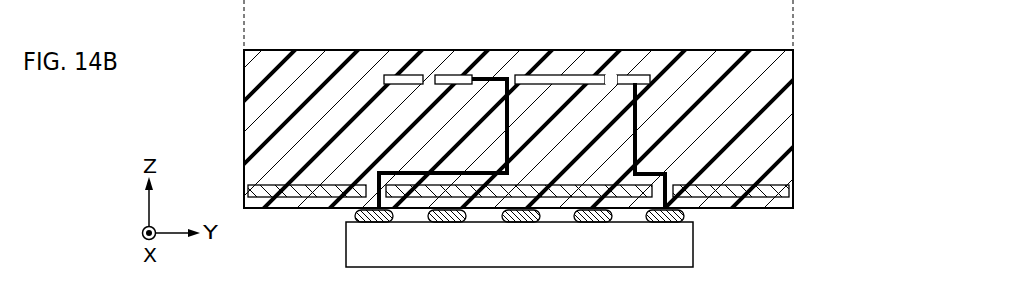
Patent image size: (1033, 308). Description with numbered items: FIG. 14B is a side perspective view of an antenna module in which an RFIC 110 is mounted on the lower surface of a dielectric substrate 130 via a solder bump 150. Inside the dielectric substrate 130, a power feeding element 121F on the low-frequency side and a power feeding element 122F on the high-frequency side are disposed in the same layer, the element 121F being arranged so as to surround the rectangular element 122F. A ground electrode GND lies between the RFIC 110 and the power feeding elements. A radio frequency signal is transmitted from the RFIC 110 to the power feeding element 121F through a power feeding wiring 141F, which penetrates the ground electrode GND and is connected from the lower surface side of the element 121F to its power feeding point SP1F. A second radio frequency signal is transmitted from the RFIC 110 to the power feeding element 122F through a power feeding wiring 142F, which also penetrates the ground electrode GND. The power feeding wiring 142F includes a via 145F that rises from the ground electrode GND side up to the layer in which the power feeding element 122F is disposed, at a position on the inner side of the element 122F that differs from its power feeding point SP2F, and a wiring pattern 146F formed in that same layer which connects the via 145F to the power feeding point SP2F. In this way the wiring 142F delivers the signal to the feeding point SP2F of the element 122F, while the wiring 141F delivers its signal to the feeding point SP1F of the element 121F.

The dielectric substrate 130 is at (783, 77).
The power feeding point SP2F is at (474, 77).
The wiring pattern 146F is at (495, 78).
The power feeding element 122F is at (580, 78).
The power feeding point SP1F is at (637, 81).
The power feeding element 121F is at (650, 78).
The power feeding wiring 141F is at (638, 123).
The ground electrode GND is at (782, 190).
The solder bump 150 is at (357, 213).
The power feeding wiring 142F is at (410, 178).
The via 145F is at (507, 132).
The RFIC 110 is at (647, 267).